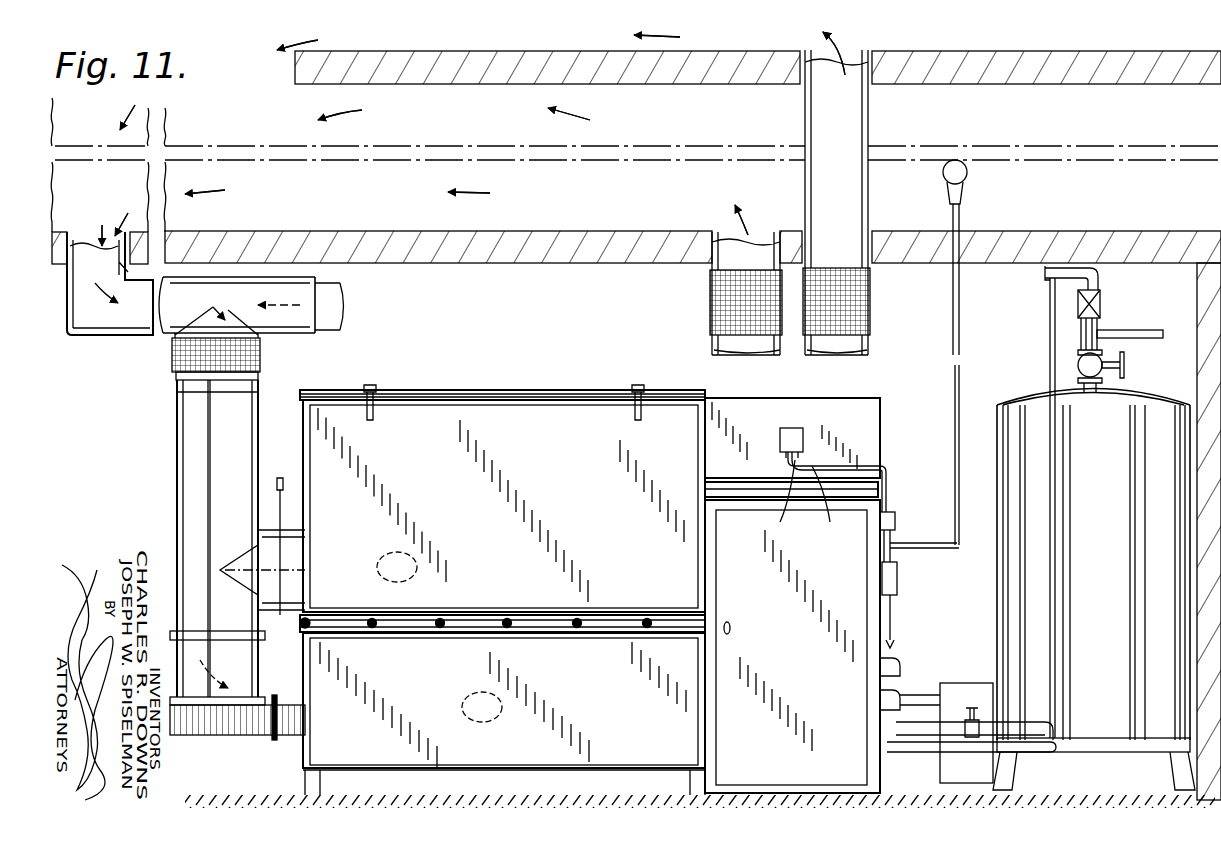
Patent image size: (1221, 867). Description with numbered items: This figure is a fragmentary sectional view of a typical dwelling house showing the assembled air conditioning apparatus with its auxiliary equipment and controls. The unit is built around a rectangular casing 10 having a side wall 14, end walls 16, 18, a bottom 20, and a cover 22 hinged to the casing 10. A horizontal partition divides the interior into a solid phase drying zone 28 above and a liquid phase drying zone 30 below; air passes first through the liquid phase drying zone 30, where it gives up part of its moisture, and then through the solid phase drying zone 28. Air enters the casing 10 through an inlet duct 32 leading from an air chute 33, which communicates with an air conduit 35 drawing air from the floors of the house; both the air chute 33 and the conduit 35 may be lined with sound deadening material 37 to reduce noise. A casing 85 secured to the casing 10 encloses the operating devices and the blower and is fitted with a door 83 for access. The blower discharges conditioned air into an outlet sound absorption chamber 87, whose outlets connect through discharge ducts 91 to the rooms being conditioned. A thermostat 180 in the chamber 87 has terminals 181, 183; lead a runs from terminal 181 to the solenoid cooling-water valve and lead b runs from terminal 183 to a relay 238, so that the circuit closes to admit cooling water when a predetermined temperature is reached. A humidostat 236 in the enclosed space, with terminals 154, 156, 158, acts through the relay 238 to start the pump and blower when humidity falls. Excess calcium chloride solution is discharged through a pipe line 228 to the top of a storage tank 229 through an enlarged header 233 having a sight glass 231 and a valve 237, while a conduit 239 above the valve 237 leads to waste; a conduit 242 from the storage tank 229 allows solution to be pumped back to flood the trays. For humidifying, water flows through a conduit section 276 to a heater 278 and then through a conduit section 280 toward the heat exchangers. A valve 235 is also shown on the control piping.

The rectangular casing 10 is at (546, 386).
The side wall 14 is at (489, 506).
The end wall 16 is at (303, 428).
The end wall 18 is at (703, 456).
The bottom 20 is at (545, 772).
The cover 22 is at (460, 390).
The solid phase drying zone 28 is at (397, 567).
The liquid phase drying zone 30 is at (504, 700).
The inlet duct 32 is at (262, 737).
The air chute 33 is at (217, 502).
The air conduit 35 is at (298, 334).
The sound deadening material 37 is at (340, 312).
The door 83 is at (792, 646).
The casing 85 is at (890, 500).
The outlet sound absorption chamber 87 is at (855, 420).
The discharge ducts 91 is at (790, 220).
The terminal 154 is at (950, 205).
The terminal 156 is at (965, 205).
The terminal 158 is at (963, 210).
The thermostat 180 is at (797, 428).
The terminal 181 is at (790, 456).
The terminal 183 is at (803, 456).
The lead a is at (786, 500).
The lead b is at (825, 503).
The pipe line 228 is at (1055, 515).
The storage tank 229 is at (1094, 590).
The sight glass 231 is at (1100, 300).
The enlarged header 233 is at (1098, 330).
The valve 235 is at (896, 521).
The humidostat 236 is at (943, 176).
The valve 237 is at (1080, 365).
The relay 238 is at (898, 590).
The conduit 239 is at (1157, 340).
The conduit 242 is at (890, 748).
The conduit section 276 is at (895, 728).
The heater 278 is at (965, 690).
The conduit section 280 is at (925, 697).